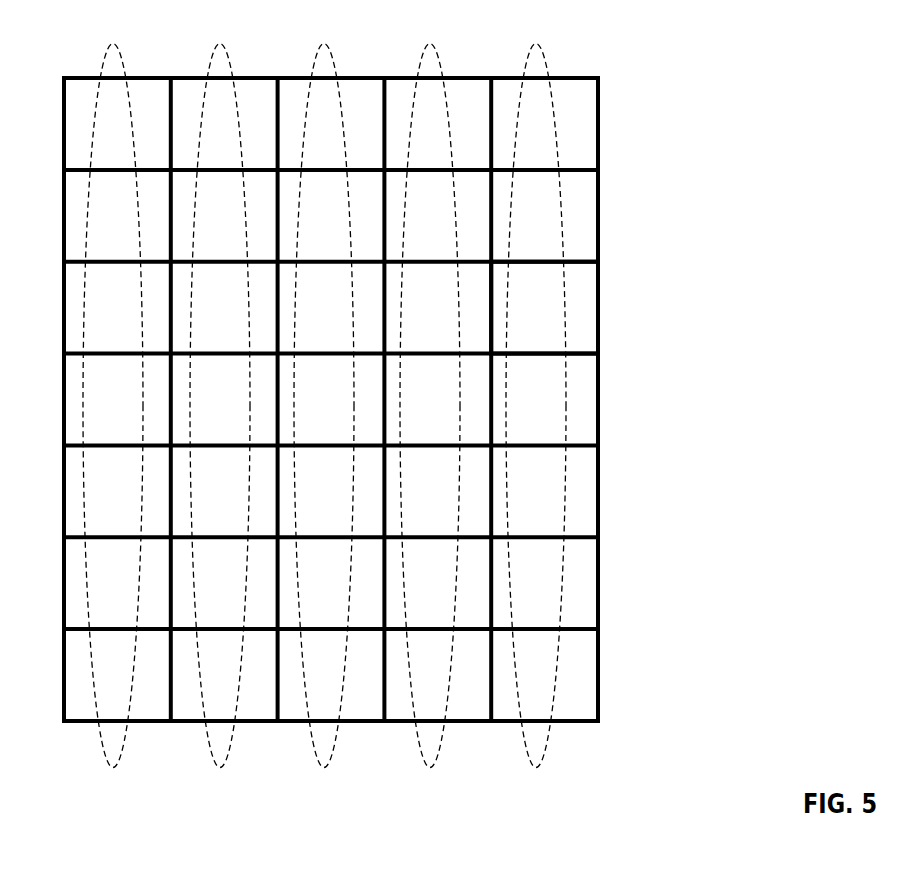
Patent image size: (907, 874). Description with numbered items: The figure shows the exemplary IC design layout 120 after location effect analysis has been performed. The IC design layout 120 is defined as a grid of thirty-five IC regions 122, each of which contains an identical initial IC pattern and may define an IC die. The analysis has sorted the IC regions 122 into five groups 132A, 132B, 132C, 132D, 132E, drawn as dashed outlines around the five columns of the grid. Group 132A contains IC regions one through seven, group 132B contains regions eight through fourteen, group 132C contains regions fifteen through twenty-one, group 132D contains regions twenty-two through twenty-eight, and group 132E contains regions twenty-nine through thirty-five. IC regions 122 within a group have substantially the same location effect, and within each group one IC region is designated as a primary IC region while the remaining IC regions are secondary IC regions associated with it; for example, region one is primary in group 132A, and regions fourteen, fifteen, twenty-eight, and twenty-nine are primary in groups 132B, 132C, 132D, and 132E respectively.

The IC design layout 120 is at (683, 156).
The IC region 122 is at (585, 308).
The group 132A is at (113, 425).
The group 132B is at (220, 425).
The group 132C is at (324, 425).
The group 132D is at (430, 425).
The group 132E is at (536, 425).